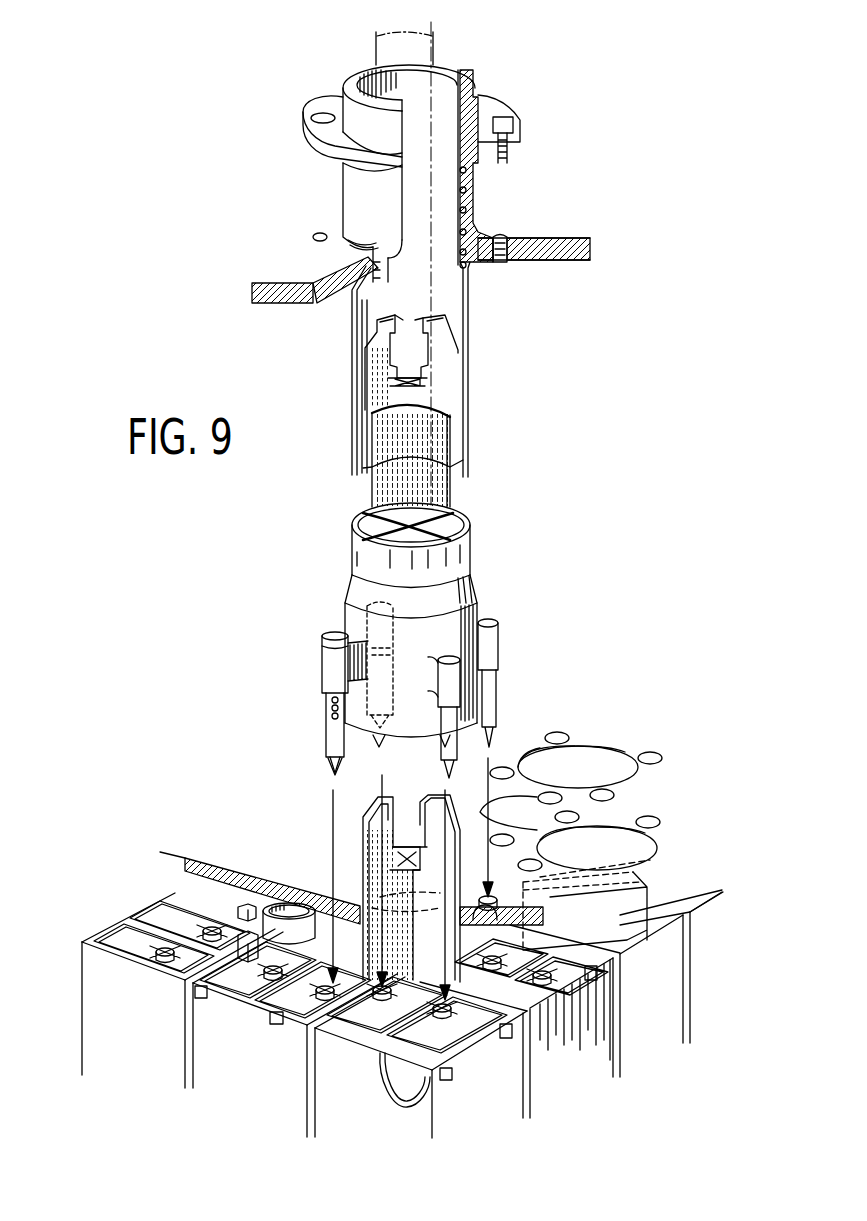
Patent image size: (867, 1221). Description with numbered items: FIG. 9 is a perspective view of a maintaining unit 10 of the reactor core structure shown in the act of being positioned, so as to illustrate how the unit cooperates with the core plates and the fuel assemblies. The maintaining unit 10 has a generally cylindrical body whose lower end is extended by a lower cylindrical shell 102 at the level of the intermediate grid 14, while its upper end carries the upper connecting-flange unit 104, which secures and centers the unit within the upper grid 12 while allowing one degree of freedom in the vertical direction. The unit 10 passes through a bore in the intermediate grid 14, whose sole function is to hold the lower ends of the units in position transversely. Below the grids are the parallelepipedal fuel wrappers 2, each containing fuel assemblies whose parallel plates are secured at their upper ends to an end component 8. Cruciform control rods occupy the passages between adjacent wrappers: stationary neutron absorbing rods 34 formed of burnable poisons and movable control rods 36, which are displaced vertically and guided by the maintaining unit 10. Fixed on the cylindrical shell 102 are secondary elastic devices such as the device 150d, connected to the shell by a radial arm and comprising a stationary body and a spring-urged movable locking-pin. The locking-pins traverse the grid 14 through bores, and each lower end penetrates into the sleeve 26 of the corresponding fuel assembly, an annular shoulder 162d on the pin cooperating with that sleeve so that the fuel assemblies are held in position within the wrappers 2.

The fuel wrapper 2 is at (198, 1026).
The end component 8 is at (407, 1065).
The maintaining unit 10 is at (472, 531).
The upper grid 12 is at (287, 283).
The intermediate grid 14 is at (220, 863).
The sleeve 26 is at (260, 1010).
The stationary neutron absorbing rod 34 is at (290, 905).
The movable control rod 36 is at (448, 353).
The lower cylindrical shell 102 is at (480, 610).
The upper connecting-flange unit 104 is at (318, 178).
The secondary elastic device 150d is at (318, 650).
The annular shoulder 162d is at (330, 757).